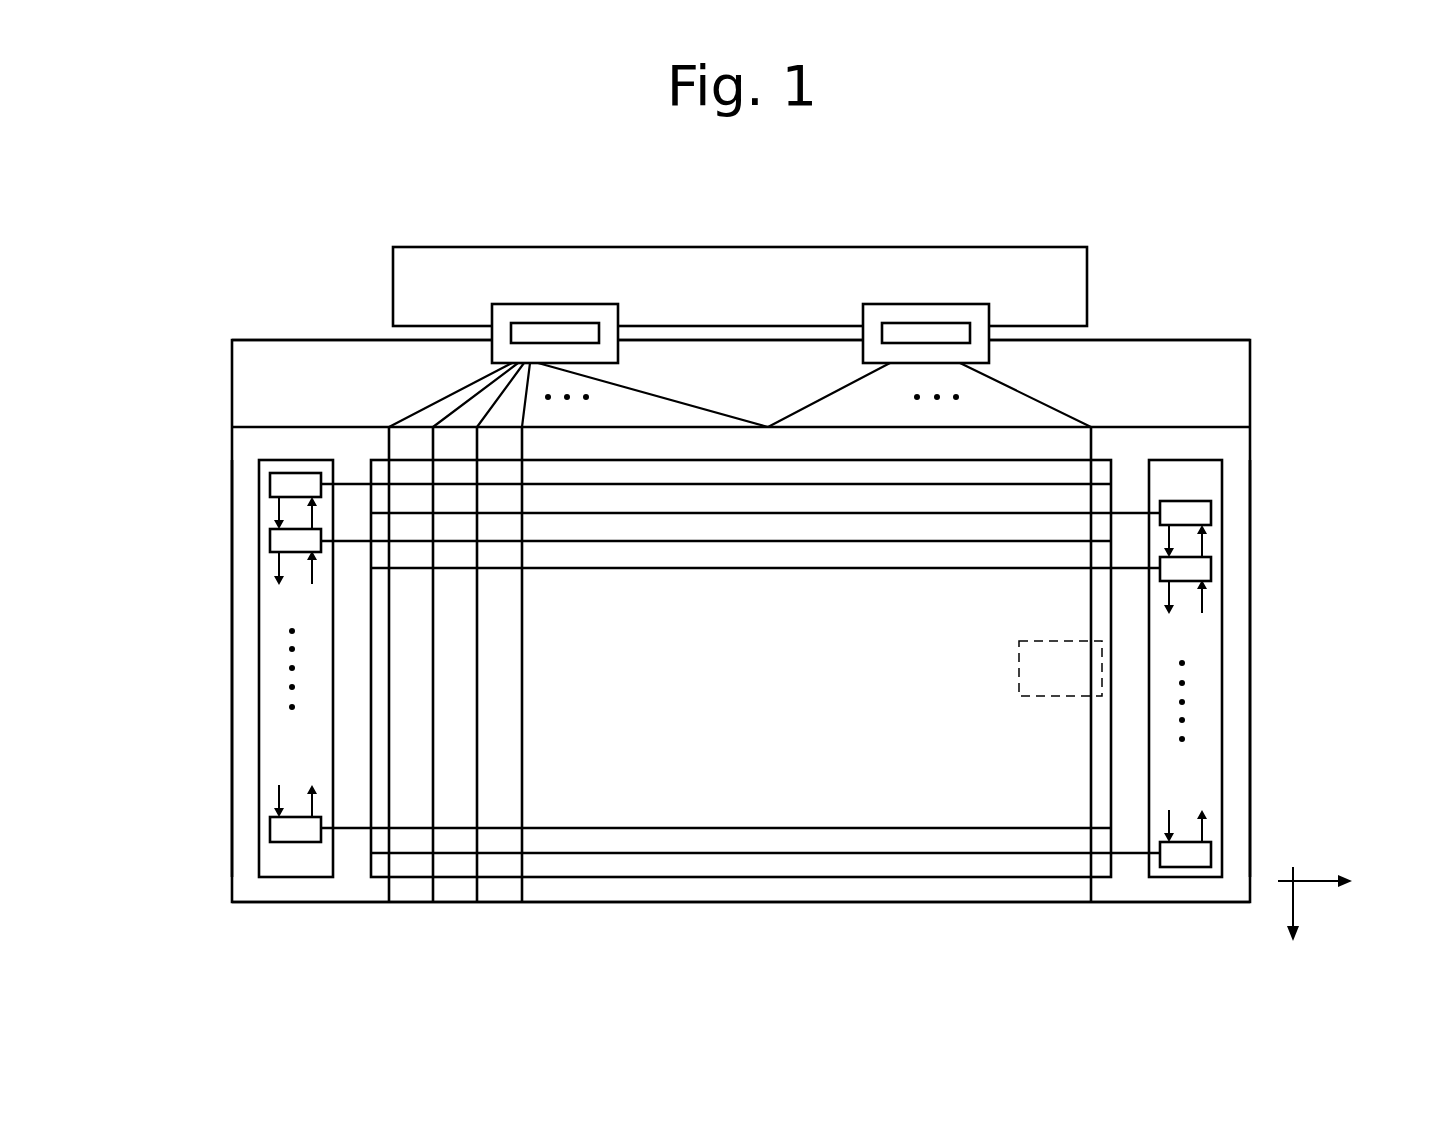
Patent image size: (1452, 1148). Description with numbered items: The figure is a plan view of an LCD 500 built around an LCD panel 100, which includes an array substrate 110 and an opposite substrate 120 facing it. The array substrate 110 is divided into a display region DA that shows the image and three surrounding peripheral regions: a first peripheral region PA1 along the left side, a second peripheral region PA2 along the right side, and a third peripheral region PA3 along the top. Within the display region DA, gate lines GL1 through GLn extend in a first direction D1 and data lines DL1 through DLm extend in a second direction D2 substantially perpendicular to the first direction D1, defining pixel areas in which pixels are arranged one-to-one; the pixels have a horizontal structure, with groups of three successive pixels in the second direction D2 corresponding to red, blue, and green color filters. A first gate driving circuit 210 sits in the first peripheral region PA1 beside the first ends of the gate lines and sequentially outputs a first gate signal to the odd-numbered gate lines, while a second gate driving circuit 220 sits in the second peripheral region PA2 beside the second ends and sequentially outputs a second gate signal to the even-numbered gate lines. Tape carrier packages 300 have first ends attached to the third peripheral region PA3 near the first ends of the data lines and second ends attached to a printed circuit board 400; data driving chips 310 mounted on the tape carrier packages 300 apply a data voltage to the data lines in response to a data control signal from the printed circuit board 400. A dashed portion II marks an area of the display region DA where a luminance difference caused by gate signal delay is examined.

The LCD 500 is at (1299, 168).
The LCD panel 100 is at (1370, 352).
The array substrate 110 is at (1250, 362).
The opposite substrate 120 is at (1236, 427).
The third peripheral region PA3 is at (1165, 373).
The printed circuit board 400 is at (1045, 247).
The data driving chip 310 is at (553, 323).
The tape carrier package 300 is at (921, 323).
The display region DA is at (1064, 796).
The first gate line GL1 is at (763, 513).
The n-th gate line GLn is at (745, 853).
The first data line DL1 is at (392, 664).
The m-th data line DLm is at (1090, 598).
The portion II is at (1019, 660).
The first gate driving circuit 210 is at (259, 613).
The second gate driving circuit 220 is at (1222, 663).
The first peripheral region PA1 is at (250, 752).
The second peripheral region PA2 is at (1236, 732).
The first direction D1 is at (1336, 881).
The second direction D2 is at (1296, 920).